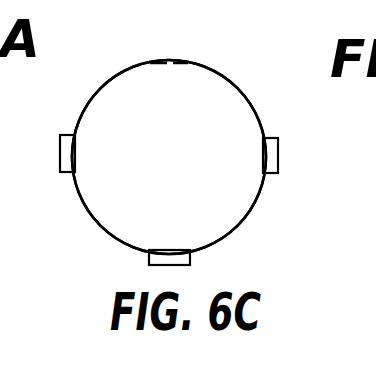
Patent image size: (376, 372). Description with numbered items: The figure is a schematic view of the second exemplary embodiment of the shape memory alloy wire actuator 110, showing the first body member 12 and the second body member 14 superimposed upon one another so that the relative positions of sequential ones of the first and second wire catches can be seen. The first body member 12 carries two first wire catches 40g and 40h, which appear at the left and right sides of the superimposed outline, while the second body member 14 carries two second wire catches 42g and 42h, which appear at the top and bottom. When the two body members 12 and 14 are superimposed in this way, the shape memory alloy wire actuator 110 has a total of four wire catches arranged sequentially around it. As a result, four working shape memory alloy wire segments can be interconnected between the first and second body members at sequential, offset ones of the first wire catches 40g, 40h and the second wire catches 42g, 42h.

The first body member 12 is at (98, 222).
The second body member 14 is at (169, 157).
The first wire catch 40g is at (60, 143).
The first wire catch 40h is at (278, 143).
The second wire catch 42g is at (198, 53).
The second wire catch 42h is at (190, 258).
The shape memory alloy wire actuator 110 is at (288, 199).